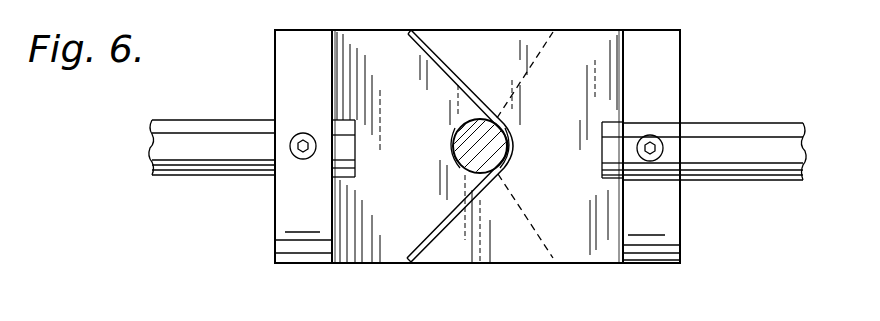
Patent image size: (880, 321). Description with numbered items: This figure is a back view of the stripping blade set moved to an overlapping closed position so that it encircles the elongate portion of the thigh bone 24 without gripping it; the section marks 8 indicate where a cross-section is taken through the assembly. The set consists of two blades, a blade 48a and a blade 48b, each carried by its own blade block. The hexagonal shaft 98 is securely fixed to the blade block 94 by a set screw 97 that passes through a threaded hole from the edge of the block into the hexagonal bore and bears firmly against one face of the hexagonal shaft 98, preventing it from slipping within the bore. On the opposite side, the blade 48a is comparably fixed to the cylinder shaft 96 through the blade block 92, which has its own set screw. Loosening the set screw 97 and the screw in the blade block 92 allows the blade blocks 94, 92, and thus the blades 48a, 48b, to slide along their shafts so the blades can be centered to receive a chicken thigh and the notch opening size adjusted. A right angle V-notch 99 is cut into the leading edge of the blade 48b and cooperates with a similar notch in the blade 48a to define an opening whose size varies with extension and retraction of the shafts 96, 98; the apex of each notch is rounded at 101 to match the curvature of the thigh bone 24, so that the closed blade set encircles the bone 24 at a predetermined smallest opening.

The elongate bone 24 is at (496, 130).
The blade block 92 is at (284, 82).
The blade block 94 is at (670, 74).
The cylinder shaft 96 is at (207, 170).
The set screw 97 is at (653, 158).
The hexagonal shaft 98 is at (786, 122).
The right angle V-notch 99 is at (534, 62).
The rounded apex 101 is at (452, 148).
The stripping blade 48a is at (373, 255).
The stripping blade 48b is at (592, 252).
The section line 8- 8 is at (432, 210).